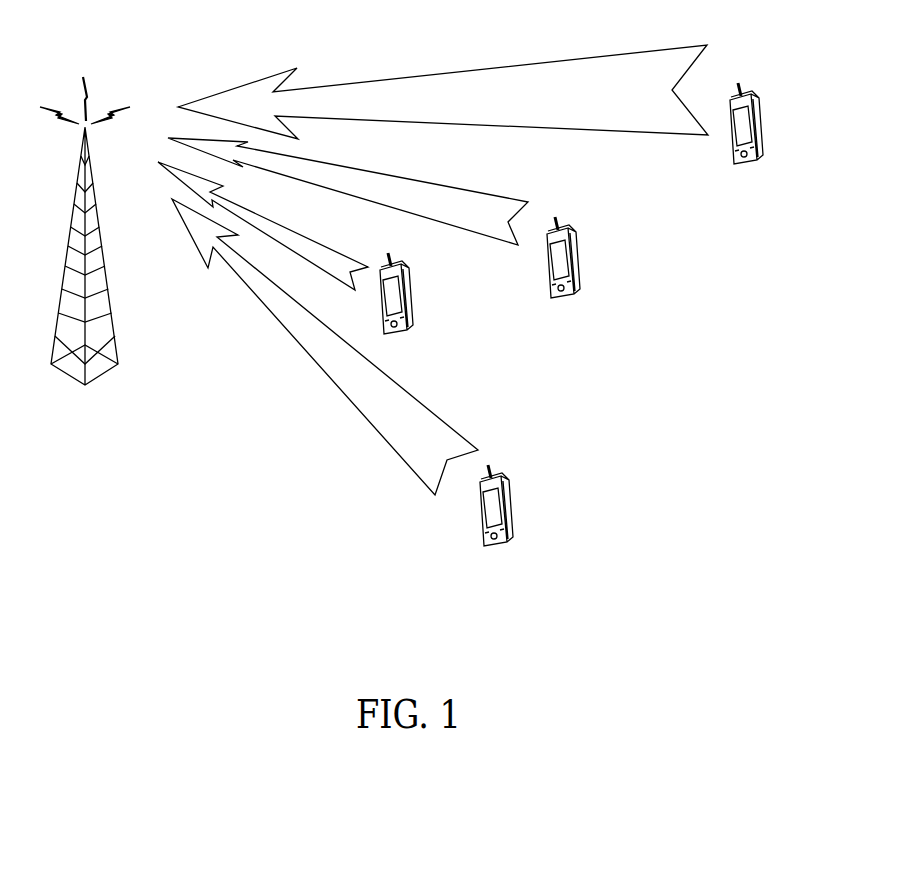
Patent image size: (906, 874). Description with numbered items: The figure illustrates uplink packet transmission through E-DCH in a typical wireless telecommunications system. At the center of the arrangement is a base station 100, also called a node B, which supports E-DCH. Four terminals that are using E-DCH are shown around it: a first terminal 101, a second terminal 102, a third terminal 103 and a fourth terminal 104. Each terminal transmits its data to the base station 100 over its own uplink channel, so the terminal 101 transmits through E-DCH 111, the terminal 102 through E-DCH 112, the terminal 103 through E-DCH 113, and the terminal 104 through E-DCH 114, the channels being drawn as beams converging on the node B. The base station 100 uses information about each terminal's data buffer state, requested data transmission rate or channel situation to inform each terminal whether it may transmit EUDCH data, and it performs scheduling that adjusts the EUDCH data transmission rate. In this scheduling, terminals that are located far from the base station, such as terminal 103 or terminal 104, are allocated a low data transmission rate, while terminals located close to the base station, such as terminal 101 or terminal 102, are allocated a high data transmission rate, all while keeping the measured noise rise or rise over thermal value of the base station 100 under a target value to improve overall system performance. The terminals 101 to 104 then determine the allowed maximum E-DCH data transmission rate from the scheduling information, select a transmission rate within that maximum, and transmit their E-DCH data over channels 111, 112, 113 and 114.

The base station 100 is at (88, 90).
The terminal 101 is at (412, 300).
The terminal 102 is at (557, 217).
The terminal 103 is at (491, 464).
The terminal 104 is at (740, 80).
The E-DCH 111 is at (333, 249).
The E-DCH 112 is at (440, 183).
The E-DCH 113 is at (440, 418).
The E-DCH 114 is at (528, 63).